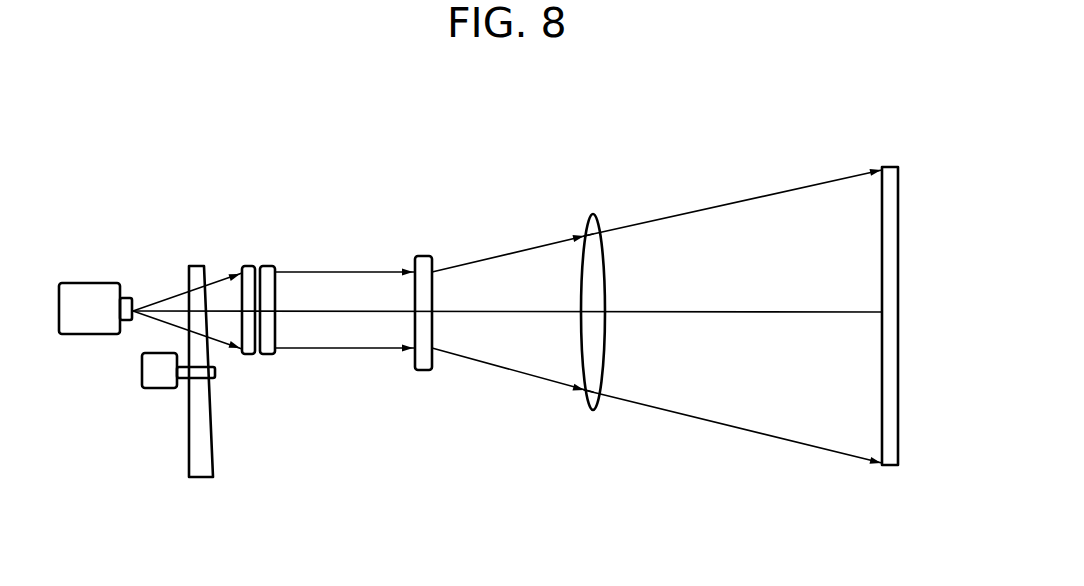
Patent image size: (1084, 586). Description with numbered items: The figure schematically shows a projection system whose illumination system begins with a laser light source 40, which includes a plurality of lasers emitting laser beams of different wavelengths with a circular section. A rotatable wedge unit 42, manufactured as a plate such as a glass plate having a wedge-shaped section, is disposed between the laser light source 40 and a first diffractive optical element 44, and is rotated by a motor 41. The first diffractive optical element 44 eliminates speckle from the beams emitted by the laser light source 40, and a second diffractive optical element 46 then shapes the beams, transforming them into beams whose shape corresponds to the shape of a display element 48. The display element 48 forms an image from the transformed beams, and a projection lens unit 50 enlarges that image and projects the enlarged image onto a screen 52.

The laser light source 40 is at (82, 335).
The motor 41 is at (147, 390).
The wedge unit 42 is at (203, 449).
The first diffractive optical element 44 is at (248, 266).
The second diffractive optical element 46 is at (272, 266).
The display element 48 is at (425, 256).
The projection lens unit 50 is at (594, 214).
The screen 52 is at (895, 255).